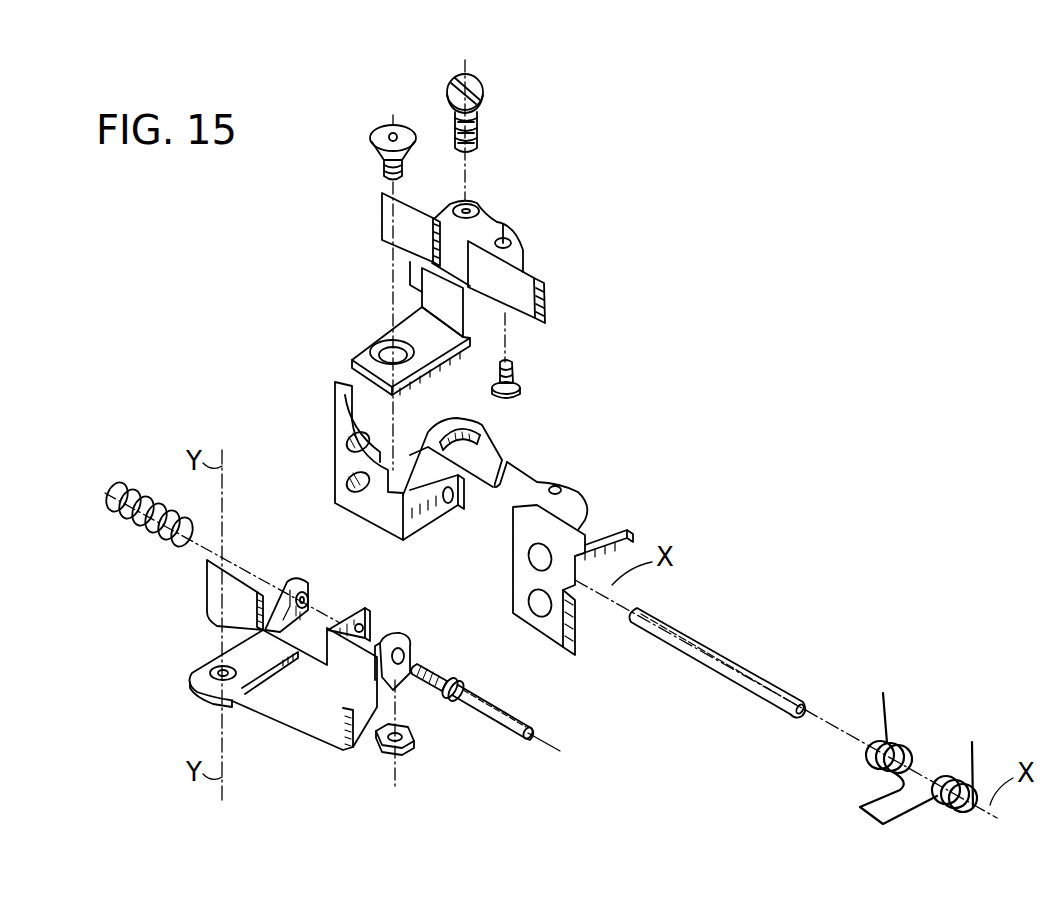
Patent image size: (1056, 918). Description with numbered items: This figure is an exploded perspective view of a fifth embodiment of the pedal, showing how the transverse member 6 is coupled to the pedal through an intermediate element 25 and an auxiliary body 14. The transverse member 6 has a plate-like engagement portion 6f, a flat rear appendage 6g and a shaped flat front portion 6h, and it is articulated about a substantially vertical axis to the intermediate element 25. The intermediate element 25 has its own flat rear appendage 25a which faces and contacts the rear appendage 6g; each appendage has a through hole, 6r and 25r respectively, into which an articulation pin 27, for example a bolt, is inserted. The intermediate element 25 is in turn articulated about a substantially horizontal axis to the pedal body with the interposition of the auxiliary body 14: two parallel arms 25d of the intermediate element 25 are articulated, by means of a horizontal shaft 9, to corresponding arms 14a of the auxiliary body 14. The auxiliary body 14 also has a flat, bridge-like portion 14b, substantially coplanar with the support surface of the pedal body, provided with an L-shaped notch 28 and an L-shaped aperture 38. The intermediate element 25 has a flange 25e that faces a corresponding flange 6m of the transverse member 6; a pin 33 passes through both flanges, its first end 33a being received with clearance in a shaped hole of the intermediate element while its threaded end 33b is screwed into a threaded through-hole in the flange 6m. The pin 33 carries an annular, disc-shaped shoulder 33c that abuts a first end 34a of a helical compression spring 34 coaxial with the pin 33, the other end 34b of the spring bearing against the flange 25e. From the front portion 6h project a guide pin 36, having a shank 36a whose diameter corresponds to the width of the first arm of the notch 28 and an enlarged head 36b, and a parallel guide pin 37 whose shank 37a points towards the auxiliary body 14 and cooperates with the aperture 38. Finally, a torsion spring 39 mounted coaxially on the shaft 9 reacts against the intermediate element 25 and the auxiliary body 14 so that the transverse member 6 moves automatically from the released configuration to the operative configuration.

The transverse member 6 is at (445, 274).
The plate-like engagement portion 6f is at (520, 285).
The flat rear appendage 6g is at (408, 315).
The shaped flat front portion 6h is at (478, 215).
The flange 6m is at (410, 272).
The through hole 6r is at (370, 348).
The horizontal shaft 9 is at (715, 656).
The auxiliary body 14 is at (526, 518).
The arms 14a is at (425, 530).
The flat bridge-like portion 14b is at (522, 446).
The intermediate element 25 is at (291, 671).
The flat rear appendage 25a is at (245, 690).
The parallel arms 25d is at (306, 596).
The flange 25e is at (360, 622).
The through hole 25r is at (212, 672).
The articulation pin 27 is at (372, 143).
The L-shaped notch 28 is at (512, 482).
The pin 33 is at (480, 705).
The first end 33a is at (515, 735).
The threaded end 33b is at (450, 678).
The annular disc-shaped shoulder 33c is at (462, 684).
The helical compression spring 34 is at (131, 527).
The spring end 34a is at (122, 492).
The spring end 34b is at (178, 548).
The guide pin 36 is at (539, 367).
The shank 36a is at (515, 364).
The enlarged head 36b is at (492, 392).
The guide pin 37 is at (490, 92).
The shank 37a is at (478, 130).
The L-shaped aperture 38 is at (485, 433).
The torsion spring 39 is at (905, 742).